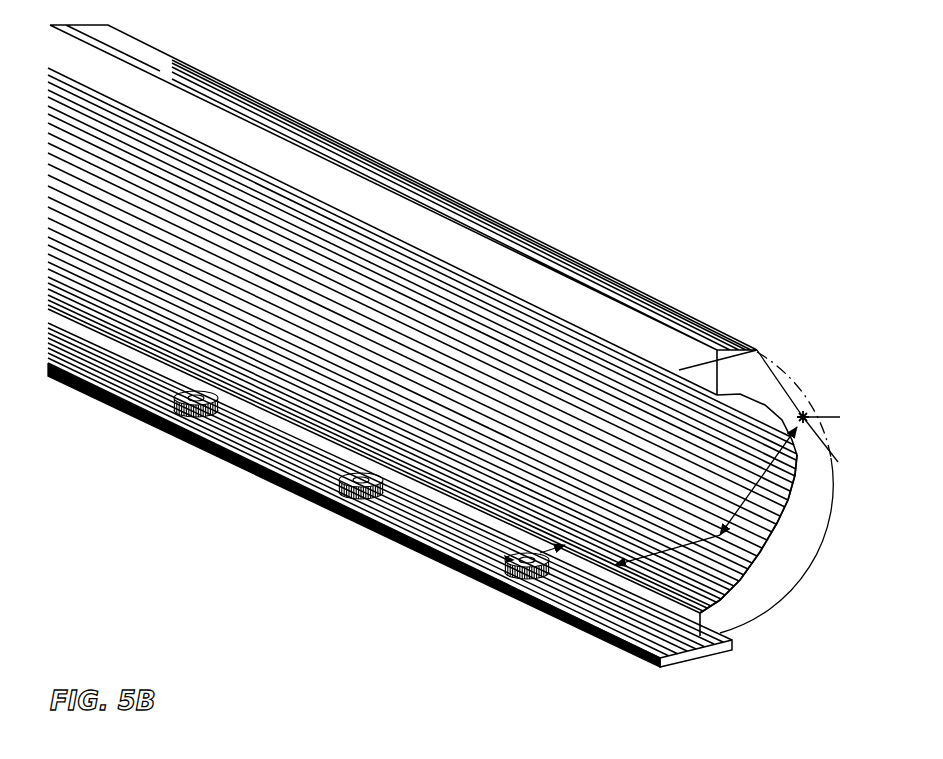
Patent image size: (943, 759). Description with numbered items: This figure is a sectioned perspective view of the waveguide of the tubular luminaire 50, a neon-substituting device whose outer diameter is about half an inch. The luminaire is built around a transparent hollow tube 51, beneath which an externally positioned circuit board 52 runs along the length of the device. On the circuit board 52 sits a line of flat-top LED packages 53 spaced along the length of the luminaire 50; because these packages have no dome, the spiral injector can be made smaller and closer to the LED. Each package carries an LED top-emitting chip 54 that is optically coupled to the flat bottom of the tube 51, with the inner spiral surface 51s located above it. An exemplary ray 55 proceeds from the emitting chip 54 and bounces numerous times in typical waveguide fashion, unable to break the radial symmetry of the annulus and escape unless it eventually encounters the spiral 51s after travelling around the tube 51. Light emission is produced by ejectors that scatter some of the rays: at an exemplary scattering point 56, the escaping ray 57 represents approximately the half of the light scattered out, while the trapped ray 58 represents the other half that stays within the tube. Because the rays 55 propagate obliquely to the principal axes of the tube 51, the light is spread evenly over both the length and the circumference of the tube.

The tubular luminaire 50 is at (133, 514).
The transparent hollow tube 51 is at (508, 273).
The inner spiral surface 51s is at (713, 602).
The circuit board 52 is at (690, 648).
The flat-top LED package 53 is at (505, 562).
The LED top-emitting chip 54 is at (522, 558).
The exemplary ray 55 is at (556, 553).
The scattering point 56 is at (803, 417).
The escaping ray 57 is at (835, 467).
The trapped ray 58 is at (698, 362).